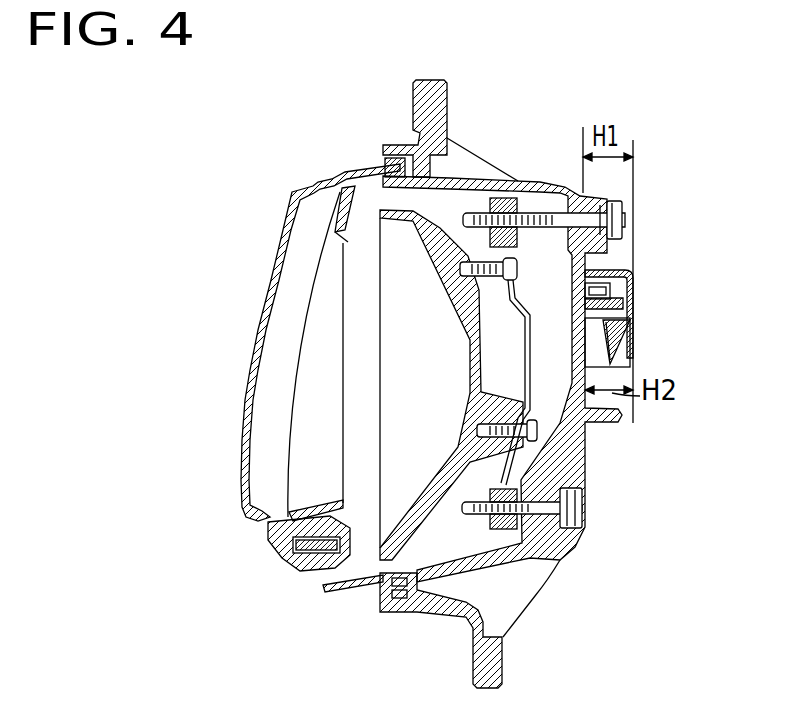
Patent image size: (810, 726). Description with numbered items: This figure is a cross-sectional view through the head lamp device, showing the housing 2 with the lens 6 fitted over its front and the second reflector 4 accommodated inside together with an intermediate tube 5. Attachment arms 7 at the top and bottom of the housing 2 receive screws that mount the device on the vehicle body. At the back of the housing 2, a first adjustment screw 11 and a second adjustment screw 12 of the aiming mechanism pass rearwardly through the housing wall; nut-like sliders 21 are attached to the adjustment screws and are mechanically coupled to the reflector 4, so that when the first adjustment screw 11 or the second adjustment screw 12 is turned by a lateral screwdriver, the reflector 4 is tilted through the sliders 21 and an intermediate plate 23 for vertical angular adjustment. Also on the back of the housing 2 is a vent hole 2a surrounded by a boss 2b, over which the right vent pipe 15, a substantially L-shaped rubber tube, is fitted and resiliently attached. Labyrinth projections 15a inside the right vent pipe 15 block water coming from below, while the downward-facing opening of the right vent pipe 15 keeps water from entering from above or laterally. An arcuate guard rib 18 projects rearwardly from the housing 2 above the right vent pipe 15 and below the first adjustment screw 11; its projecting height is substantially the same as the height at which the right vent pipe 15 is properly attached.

The housing 2 is at (588, 463).
The vent hole 2a is at (587, 288).
The boss 2b is at (613, 287).
The second reflector 4 is at (467, 420).
The intermediate tube 5 is at (342, 237).
The lens 6 is at (252, 349).
The attachment arm 7 is at (448, 104).
The first adjustment screw 11 is at (622, 224).
The second adjustment screw 12 is at (585, 510).
The right vent pipe 15 is at (633, 303).
The labyrinth projections 15a is at (613, 340).
The guard rib 18 is at (634, 250).
The slider 21 is at (512, 200).
The intermediate plate 23 is at (535, 392).